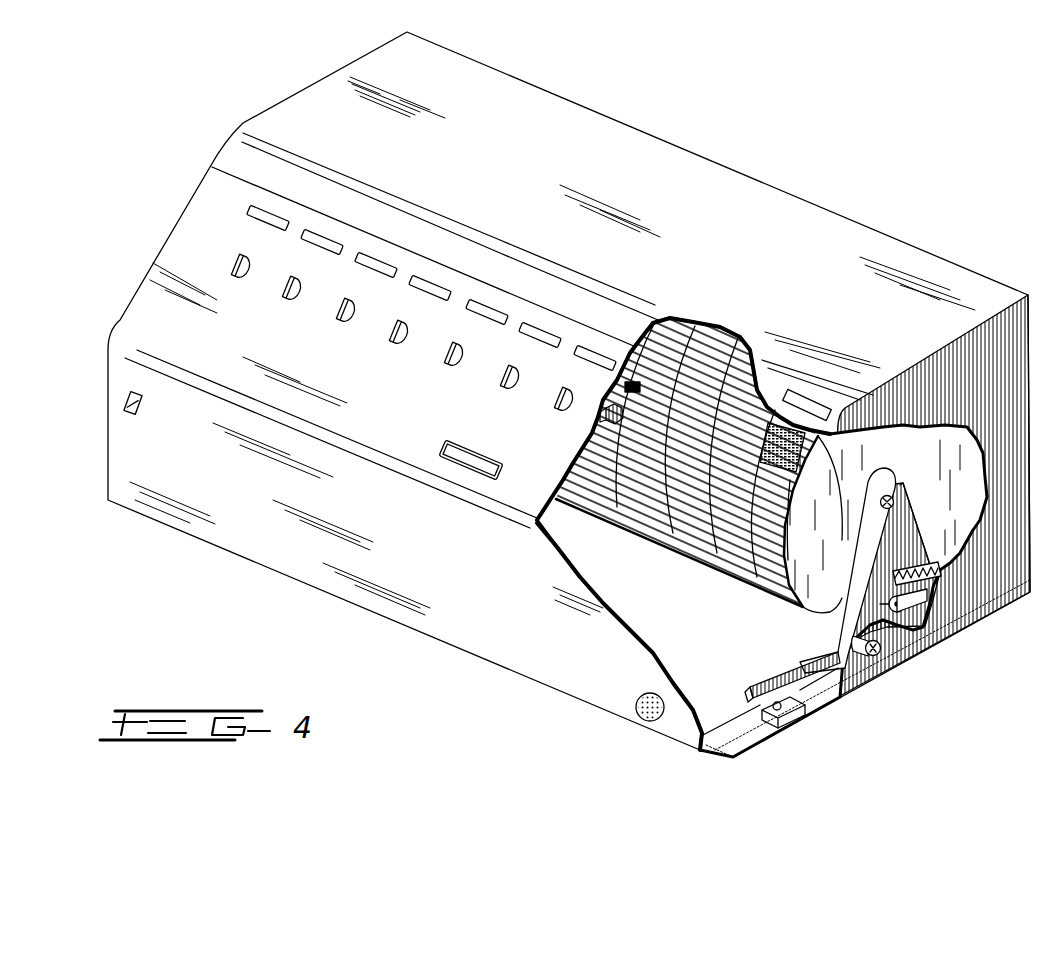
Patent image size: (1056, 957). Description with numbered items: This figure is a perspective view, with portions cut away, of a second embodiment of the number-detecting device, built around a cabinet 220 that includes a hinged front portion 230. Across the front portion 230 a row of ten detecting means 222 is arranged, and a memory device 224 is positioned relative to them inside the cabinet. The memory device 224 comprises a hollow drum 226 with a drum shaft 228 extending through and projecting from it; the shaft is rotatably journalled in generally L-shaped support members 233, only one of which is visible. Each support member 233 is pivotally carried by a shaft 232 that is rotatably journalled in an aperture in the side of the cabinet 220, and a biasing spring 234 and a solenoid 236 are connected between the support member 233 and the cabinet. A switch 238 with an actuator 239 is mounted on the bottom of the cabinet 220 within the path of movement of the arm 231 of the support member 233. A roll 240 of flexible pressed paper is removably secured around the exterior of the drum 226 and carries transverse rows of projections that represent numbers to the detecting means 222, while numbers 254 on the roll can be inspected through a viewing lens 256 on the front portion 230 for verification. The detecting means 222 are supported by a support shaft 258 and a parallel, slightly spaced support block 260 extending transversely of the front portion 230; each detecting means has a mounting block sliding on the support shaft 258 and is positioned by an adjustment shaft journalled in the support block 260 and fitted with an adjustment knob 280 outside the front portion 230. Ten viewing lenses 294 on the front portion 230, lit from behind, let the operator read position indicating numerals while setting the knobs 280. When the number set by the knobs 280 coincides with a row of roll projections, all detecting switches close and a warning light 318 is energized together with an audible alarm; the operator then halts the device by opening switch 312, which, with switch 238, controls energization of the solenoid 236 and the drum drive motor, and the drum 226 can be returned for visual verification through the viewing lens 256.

The cabinet 220 is at (786, 196).
The detecting means 222 is at (402, 334).
The memory device 224 is at (687, 471).
The hollow drum 226 is at (812, 606).
The drum shaft 228 is at (896, 503).
The hinged front portion 230 is at (171, 234).
The arm 231 is at (758, 684).
The shaft 232 is at (880, 660).
The support member 233 is at (885, 470).
The biasing spring 234 is at (913, 572).
The solenoid 236 is at (969, 620).
The switch 238 is at (762, 717).
The actuator 239 is at (783, 702).
The roll 240 is at (672, 548).
The numbers 254 is at (800, 468).
The viewing lens 256 is at (825, 405).
The support shaft 258 is at (621, 385).
The support block 260 is at (600, 411).
The adjustment knob 280 is at (241, 278).
The viewing lens 294 is at (416, 293).
The switch 312 is at (144, 409).
The warning light 318 is at (494, 468).